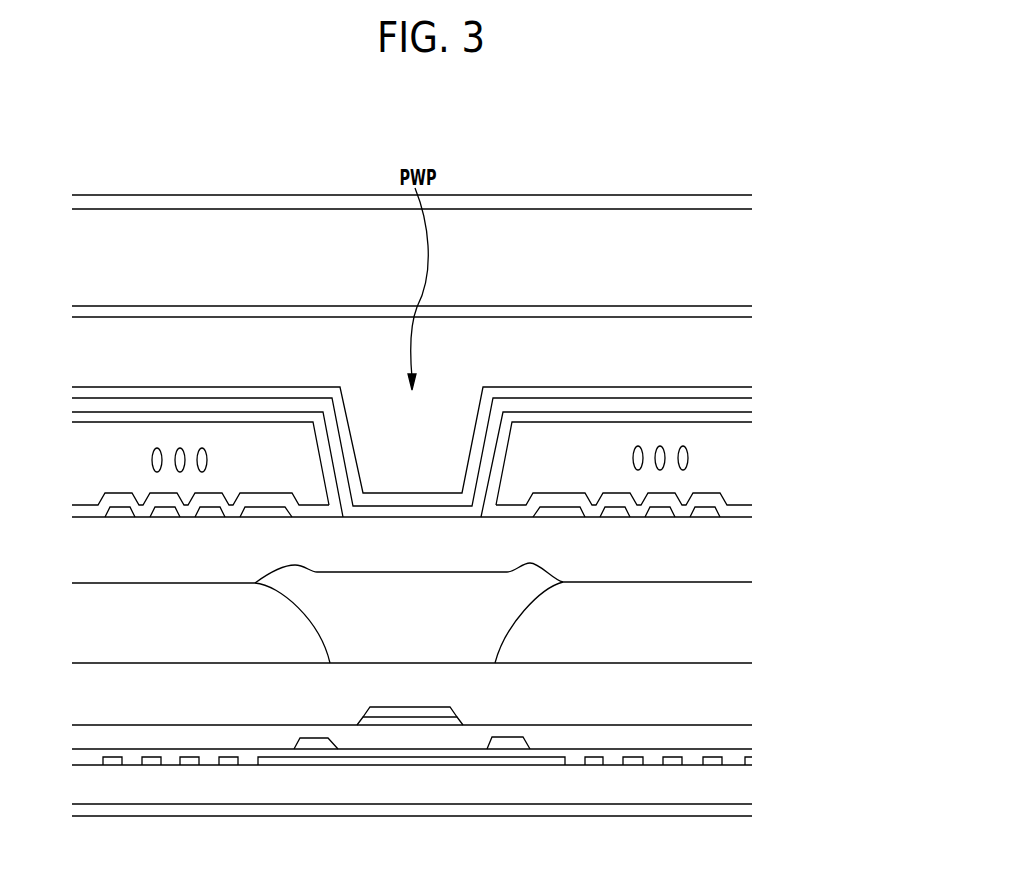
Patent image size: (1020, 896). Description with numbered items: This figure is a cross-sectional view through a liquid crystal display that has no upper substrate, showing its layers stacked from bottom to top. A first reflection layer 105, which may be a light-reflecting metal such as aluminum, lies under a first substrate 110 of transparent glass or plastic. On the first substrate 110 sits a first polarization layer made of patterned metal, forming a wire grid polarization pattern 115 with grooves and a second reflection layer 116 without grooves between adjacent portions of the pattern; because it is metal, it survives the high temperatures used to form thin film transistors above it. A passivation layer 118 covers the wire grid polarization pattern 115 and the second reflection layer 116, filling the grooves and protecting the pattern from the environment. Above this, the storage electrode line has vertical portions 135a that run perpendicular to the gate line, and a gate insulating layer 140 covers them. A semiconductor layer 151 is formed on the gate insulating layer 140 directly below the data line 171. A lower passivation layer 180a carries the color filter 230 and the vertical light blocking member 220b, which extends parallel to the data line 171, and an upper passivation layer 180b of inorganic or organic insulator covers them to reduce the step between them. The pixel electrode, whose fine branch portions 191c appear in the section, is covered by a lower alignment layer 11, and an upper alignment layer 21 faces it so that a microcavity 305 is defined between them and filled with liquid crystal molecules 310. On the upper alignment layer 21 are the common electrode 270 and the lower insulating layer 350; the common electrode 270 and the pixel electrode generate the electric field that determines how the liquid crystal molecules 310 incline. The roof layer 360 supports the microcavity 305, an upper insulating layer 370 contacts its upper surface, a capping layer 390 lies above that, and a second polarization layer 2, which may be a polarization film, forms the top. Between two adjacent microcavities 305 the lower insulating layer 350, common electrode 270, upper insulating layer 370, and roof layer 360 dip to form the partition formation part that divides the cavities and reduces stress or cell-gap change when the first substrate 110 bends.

The second polarization layer 2 is at (745, 195).
The capping layer 390 is at (738, 243).
The upper insulating layer 370 is at (740, 306).
The roof layer 360 is at (735, 333).
The lower insulating layer 350 is at (740, 364).
The common electrode 270 is at (735, 392).
The upper alignment layer 21 is at (735, 415).
The liquid crystal molecules 310 is at (688, 455).
The microcavity 305 is at (710, 478).
The lower alignment layer 11 is at (735, 512).
The fine branch portions 191c is at (656, 507).
The upper passivation layer 180b is at (137, 560).
The lower passivation layer 180a is at (242, 708).
The color filter 230 is at (698, 625).
The vertical light blocking member 220b is at (468, 627).
The data line 171 is at (428, 713).
The semiconductor layer 151 is at (383, 722).
The gate insulating layer 140 is at (573, 740).
The vertical portions 135a is at (317, 745).
The second reflection layer 116 is at (533, 762).
The wire grid polarization pattern 115 is at (632, 760).
The passivation layer 118 is at (748, 760).
The first substrate 110 is at (180, 788).
The first reflection layer 105 is at (745, 808).